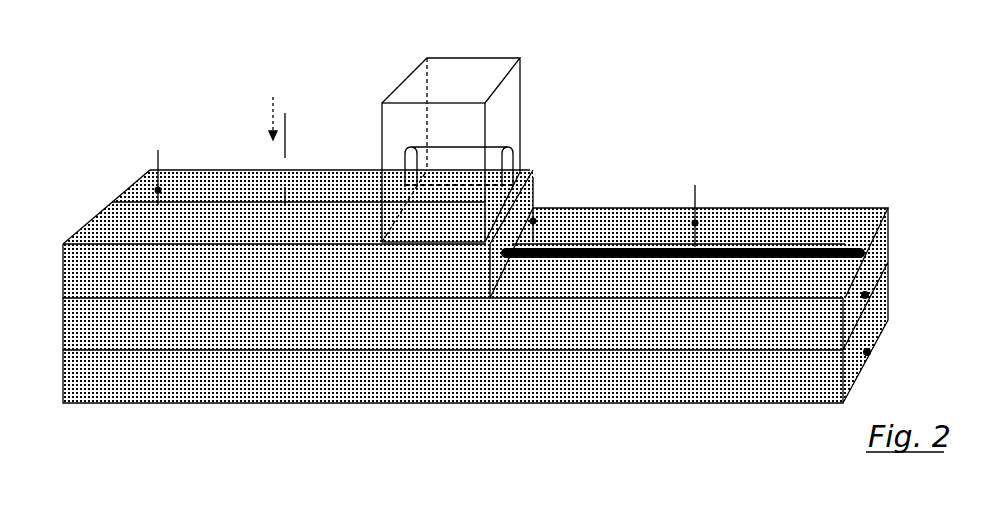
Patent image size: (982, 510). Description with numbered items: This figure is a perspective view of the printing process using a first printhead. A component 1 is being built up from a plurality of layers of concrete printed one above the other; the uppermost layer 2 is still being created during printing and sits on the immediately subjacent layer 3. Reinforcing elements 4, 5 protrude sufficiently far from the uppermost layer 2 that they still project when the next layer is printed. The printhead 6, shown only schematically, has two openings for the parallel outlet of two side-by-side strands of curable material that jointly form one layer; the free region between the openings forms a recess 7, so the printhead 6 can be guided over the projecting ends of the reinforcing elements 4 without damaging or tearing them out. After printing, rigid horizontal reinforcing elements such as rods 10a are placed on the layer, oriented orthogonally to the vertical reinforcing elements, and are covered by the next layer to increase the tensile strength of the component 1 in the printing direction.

The component 1 is at (809, 188).
The uppermost layer 2 is at (272, 287).
The subjacent layer 3 is at (292, 346).
The reinforcing elements 4 is at (285, 198).
The reinforcing element 5 is at (273, 147).
The printhead 6 is at (522, 66).
The recess 7 is at (514, 157).
The rods 10a is at (830, 247).